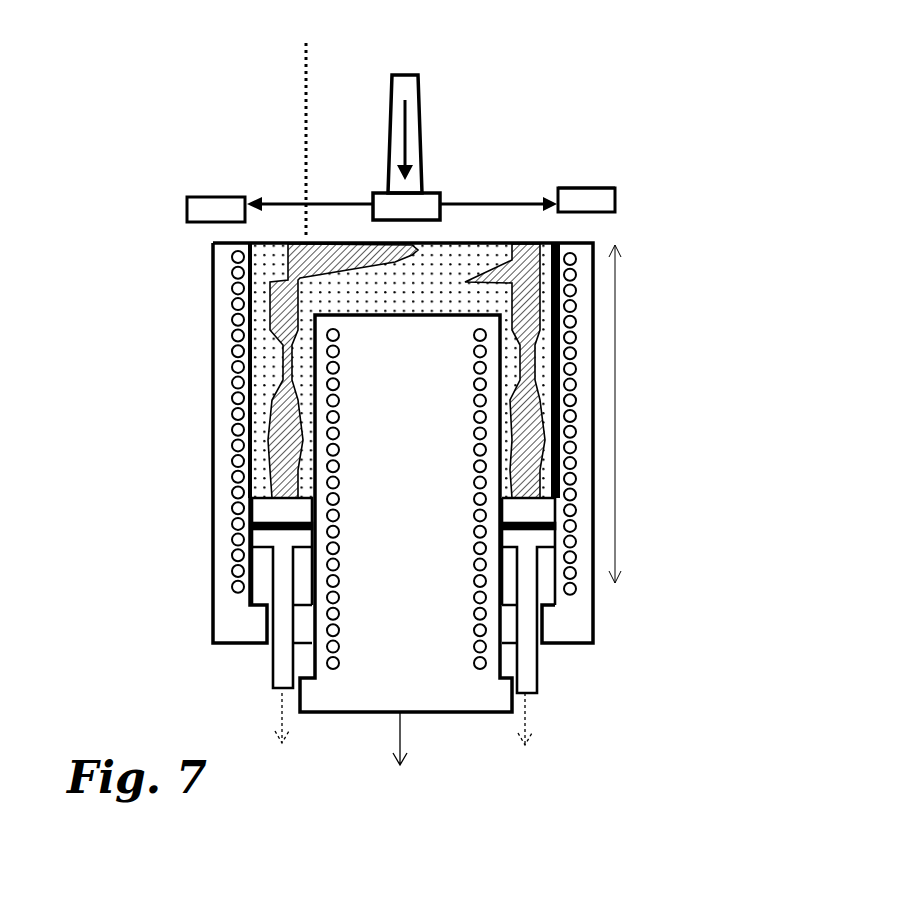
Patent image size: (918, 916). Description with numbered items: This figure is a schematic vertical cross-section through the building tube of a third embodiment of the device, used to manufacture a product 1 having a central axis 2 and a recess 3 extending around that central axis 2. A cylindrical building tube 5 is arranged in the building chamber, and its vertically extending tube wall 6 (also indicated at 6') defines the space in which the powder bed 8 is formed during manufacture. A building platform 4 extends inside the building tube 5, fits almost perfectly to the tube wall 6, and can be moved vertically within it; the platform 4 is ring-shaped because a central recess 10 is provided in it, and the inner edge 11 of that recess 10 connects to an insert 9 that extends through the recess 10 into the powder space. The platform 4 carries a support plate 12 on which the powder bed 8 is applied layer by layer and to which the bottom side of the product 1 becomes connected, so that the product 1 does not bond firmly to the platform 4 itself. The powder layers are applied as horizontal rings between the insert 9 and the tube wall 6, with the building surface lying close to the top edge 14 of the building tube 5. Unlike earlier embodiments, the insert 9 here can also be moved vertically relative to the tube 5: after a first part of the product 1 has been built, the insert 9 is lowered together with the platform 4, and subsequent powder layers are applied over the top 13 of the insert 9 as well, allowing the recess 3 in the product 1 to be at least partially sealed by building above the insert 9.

The product 1 is at (282, 357).
The central axis 2 is at (273, 338).
The recess 3 is at (543, 362).
The building platform 4 is at (273, 540).
The building tube 5 is at (220, 495).
The tube wall 6 is at (195, 350).
The displaced lid 6' is at (617, 413).
The powder bed 8 is at (308, 82).
The insert 9 is at (367, 658).
The central recess 10 is at (405, 90).
The inner edge 11 is at (593, 197).
The support plate 12 is at (407, 148).
The top of the insert 13 is at (558, 187).
The top edge of the building tube 14 is at (373, 195).